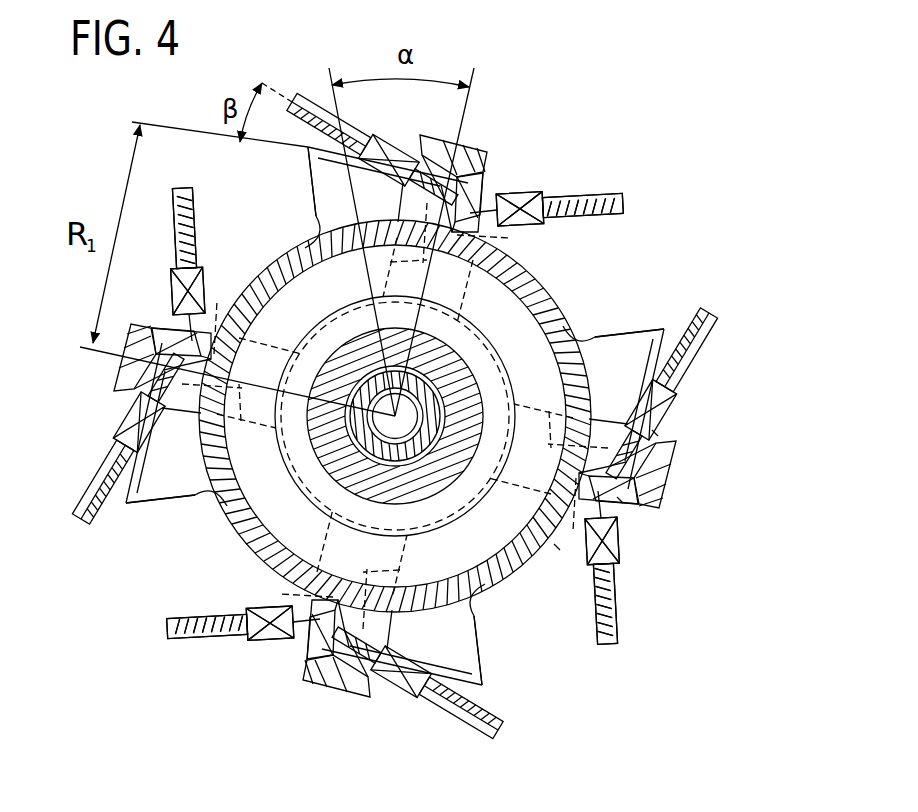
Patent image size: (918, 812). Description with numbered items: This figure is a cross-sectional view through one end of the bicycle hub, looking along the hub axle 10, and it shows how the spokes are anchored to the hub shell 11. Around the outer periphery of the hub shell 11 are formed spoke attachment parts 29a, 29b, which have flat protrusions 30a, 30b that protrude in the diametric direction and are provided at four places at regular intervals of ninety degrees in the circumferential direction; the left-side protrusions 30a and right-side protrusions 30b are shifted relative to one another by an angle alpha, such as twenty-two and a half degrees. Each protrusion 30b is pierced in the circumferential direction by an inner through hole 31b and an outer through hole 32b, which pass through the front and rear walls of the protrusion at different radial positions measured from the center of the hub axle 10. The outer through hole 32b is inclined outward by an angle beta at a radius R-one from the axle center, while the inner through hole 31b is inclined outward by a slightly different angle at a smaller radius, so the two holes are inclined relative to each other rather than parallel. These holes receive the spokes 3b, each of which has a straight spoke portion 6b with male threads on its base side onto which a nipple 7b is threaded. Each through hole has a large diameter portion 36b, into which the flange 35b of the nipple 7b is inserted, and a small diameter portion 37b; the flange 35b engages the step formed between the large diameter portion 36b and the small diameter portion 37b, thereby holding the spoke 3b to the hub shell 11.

The hub axle 10 is at (445, 396).
The hub shell 11 is at (543, 300).
The spoke 3b is at (655, 127).
The straight spoke portion 6b is at (597, 190).
The nipple 7b is at (523, 190).
The spoke attachment part 29a is at (306, 180).
The spoke attachment part 29b is at (434, 130).
The protrusion 30a is at (312, 200).
The protrusion 30b is at (482, 152).
The inner through hole 31b is at (477, 233).
The outer through hole 32b is at (452, 150).
The flange 35b is at (620, 500).
The large diameter portion 36b is at (557, 547).
The small diameter portion 37b is at (655, 433).